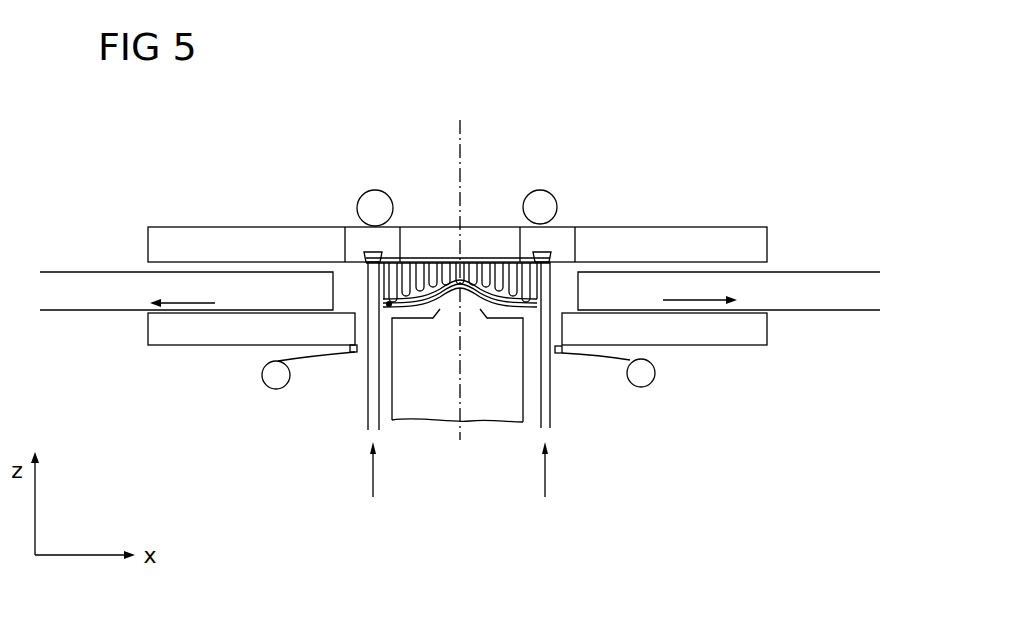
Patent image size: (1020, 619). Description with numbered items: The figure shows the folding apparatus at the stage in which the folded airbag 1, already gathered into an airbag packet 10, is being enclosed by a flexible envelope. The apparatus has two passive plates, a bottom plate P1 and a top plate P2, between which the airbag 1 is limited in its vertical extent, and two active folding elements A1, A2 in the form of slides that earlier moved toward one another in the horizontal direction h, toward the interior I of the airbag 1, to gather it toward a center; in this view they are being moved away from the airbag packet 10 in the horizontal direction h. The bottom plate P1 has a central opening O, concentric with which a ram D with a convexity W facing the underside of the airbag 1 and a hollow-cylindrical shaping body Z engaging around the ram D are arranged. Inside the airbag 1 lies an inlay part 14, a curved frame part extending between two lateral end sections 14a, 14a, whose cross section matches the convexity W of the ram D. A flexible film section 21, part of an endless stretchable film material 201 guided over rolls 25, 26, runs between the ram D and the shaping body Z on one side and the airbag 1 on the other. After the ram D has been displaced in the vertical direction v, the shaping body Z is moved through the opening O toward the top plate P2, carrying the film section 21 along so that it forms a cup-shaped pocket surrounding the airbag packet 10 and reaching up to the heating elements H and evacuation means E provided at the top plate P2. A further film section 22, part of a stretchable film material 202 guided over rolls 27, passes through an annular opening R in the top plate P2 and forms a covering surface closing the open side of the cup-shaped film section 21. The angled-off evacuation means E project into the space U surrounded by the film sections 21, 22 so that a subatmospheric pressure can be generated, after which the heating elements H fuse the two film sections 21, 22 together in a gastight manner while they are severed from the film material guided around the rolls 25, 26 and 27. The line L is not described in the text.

The airbag 1 is at (550, 283).
The airbag packet 10 is at (500, 250).
The inlay part 14 is at (432, 258).
The lateral end section 14a is at (548, 300).
The film section 21 is at (362, 338).
The film section 22 is at (467, 258).
The roll 25 is at (645, 377).
The roll 26 is at (560, 354).
The roll 27 is at (541, 207).
The stretchable film material 201 is at (327, 357).
The stretchable film material 202 is at (361, 250).
The bottom plate P1 is at (192, 333).
The top plate P2 is at (332, 228).
The active folding element A1 is at (118, 300).
The active folding element A2 is at (815, 300).
The evacuation means E is at (551, 258).
The heating element H is at (547, 252).
The annular opening R is at (392, 256).
The space U is at (422, 239).
The interior I is at (388, 283).
The convexity W is at (478, 312).
The ram D is at (487, 407).
The center line L is at (460, 445).
The cylindrical shaping body Z is at (368, 427).
The opening O is at (560, 320).
The horizontal direction h is at (443, 291).
The vertical direction v is at (467, 473).